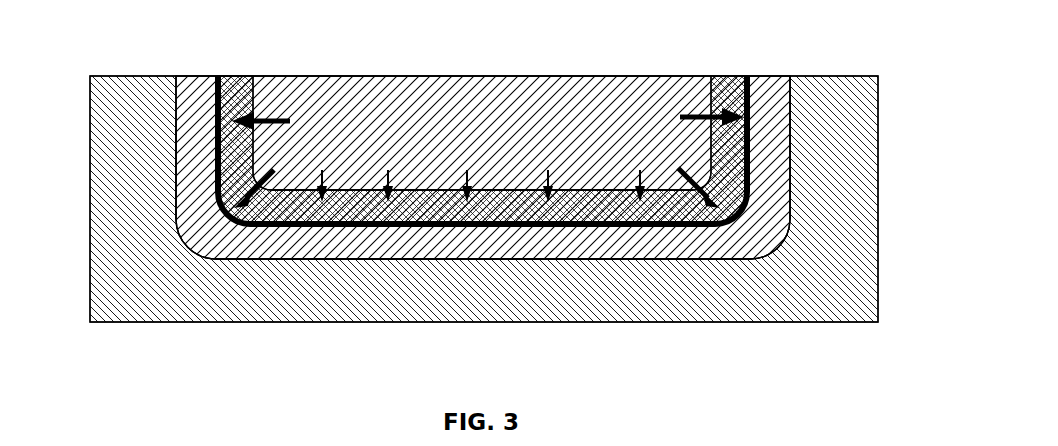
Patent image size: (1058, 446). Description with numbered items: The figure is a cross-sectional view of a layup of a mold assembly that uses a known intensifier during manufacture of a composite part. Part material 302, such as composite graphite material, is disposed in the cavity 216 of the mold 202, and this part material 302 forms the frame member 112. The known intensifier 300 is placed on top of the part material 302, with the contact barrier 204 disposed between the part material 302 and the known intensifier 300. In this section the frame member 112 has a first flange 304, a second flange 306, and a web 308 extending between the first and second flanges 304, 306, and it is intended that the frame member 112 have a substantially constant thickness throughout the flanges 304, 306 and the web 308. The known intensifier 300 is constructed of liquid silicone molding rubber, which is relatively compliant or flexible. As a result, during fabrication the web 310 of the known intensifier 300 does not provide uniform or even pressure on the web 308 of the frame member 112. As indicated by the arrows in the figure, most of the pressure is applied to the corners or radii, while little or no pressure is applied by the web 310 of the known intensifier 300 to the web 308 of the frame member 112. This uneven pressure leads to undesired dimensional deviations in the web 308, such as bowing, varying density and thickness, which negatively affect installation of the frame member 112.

The mold 202 is at (113, 82).
The contact barrier 204 is at (220, 82).
The first flange 304 is at (200, 146).
The second flange 306 is at (770, 143).
The web 308 is at (362, 238).
The cavity 216 is at (168, 196).
The known intensifier 300 is at (413, 195).
The web 310 is at (497, 210).
The part material 302 is at (247, 240).
The frame member 112 is at (247, 240).